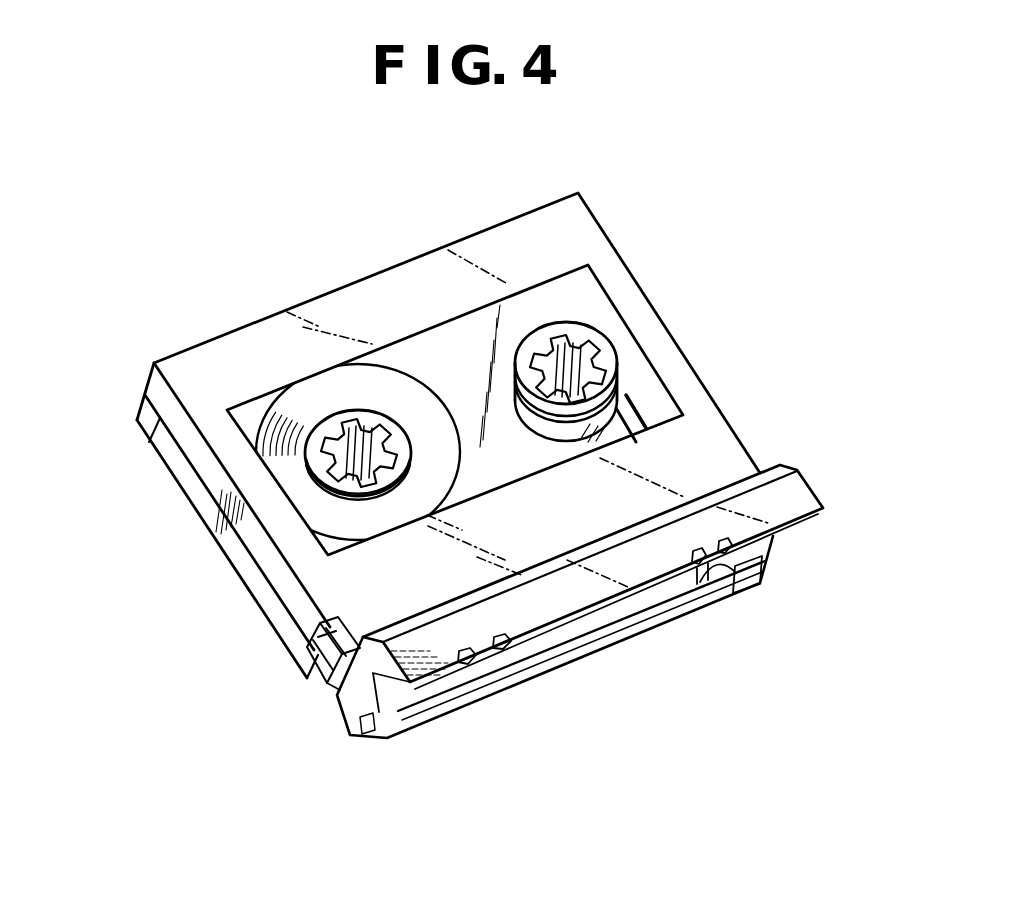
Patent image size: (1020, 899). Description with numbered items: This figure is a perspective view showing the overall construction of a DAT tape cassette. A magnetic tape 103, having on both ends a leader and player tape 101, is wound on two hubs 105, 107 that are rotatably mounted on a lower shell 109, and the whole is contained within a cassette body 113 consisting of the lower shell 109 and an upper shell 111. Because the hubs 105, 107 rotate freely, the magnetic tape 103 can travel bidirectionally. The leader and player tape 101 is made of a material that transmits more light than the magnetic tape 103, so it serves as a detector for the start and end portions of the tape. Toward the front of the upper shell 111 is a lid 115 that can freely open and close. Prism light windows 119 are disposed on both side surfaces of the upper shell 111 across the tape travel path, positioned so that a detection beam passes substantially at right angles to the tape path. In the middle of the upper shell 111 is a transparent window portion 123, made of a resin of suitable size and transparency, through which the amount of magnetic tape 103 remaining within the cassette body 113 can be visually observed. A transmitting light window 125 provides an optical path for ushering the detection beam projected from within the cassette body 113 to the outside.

The leader and player tape 101 is at (712, 600).
The magnetic tape 103 is at (598, 650).
The hub 105 is at (603, 350).
The hub 107 is at (364, 413).
The lower shell 109 is at (253, 583).
The upper shell 111 is at (290, 597).
The cassette body 113 is at (149, 632).
The lid 115 is at (790, 499).
The prism light window 119 is at (324, 686).
The transparent window portion 123 is at (521, 312).
The transmitting light window 125 is at (333, 682).